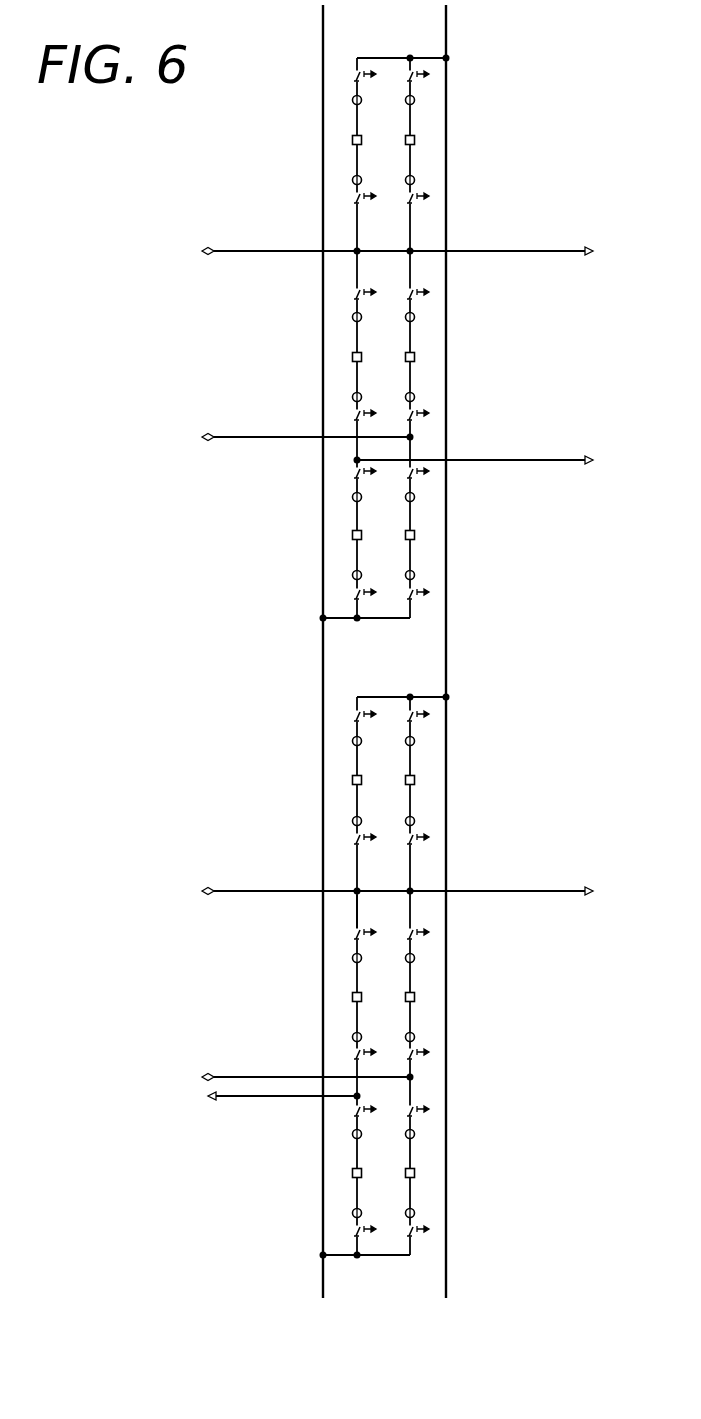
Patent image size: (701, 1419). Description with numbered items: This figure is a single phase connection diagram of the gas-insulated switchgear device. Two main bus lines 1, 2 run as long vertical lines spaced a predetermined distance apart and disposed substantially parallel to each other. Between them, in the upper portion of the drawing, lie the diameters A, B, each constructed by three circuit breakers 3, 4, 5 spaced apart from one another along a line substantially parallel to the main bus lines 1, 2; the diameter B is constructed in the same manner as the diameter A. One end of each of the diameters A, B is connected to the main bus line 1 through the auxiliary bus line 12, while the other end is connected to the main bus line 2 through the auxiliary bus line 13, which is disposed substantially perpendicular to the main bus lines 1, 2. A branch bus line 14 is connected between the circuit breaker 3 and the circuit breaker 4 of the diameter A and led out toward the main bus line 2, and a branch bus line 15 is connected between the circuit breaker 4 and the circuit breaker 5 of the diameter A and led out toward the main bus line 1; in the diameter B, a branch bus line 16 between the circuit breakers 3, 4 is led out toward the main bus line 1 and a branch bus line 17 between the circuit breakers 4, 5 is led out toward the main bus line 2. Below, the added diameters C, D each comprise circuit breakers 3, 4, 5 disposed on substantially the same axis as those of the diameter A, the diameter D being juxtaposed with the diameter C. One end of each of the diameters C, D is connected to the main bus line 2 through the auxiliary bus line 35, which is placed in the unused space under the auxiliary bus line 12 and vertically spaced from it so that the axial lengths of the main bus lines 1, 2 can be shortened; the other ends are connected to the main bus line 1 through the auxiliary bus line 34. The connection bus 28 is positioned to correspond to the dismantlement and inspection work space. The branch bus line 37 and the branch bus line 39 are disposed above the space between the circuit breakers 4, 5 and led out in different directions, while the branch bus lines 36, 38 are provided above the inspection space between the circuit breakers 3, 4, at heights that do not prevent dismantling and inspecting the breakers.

The main bus line 1 is at (322, 128).
The main bus line 2 is at (447, 175).
The circuit breaker 3 is at (352, 535).
The circuit breaker 4 is at (352, 357).
The circuit breaker 5 is at (352, 141).
The auxiliary bus line 12 is at (393, 620).
The auxiliary bus line 13 is at (391, 57).
The branch bus line 14 is at (512, 458).
The branch bus line 15 is at (243, 250).
The branch bus line 16 is at (258, 436).
The branch bus line 17 is at (552, 254).
The connection bus 28 is at (357, 912).
The auxiliary bus line 34 is at (393, 1258).
The auxiliary bus line 35 is at (420, 697).
The branch bus line 36 is at (243, 1098).
The branch bus line 37 is at (270, 890).
The branch bus line 38 is at (257, 1075).
The branch bus line 39 is at (516, 890).
The diameter A is at (352, 99).
The diameter B is at (414, 92).
The added diameter C is at (355, 727).
The added diameter D is at (414, 757).